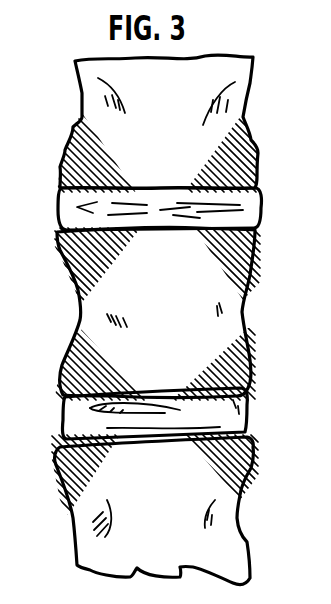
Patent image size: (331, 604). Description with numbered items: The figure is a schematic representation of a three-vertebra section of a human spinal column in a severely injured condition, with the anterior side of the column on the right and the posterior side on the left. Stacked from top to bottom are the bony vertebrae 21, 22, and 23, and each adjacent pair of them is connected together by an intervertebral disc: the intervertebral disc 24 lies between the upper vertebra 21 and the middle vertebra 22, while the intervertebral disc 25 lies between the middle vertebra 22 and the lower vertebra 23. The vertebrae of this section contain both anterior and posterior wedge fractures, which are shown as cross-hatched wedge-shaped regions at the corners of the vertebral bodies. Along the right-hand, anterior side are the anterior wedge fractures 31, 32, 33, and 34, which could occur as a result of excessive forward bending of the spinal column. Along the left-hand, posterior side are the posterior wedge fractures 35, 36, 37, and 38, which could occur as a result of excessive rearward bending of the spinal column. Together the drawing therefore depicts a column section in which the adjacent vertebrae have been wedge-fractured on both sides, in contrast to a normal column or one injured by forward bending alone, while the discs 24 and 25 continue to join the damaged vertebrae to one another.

The bony vertebra 21 is at (80, 92).
The bony vertebra 22 is at (78, 306).
The bony vertebra 23 is at (68, 517).
The intervertebral disc 24 is at (58, 203).
The intervertebral disc 25 is at (67, 419).
The anterior wedge fracture 31 is at (250, 134).
The anterior wedge fracture 32 is at (228, 257).
The anterior wedge fracture 33 is at (218, 357).
The anterior wedge fracture 34 is at (238, 467).
The posterior wedge fracture 35 is at (70, 148).
The posterior wedge fracture 36 is at (57, 250).
The posterior wedge fracture 37 is at (70, 358).
The posterior wedge fracture 38 is at (55, 465).